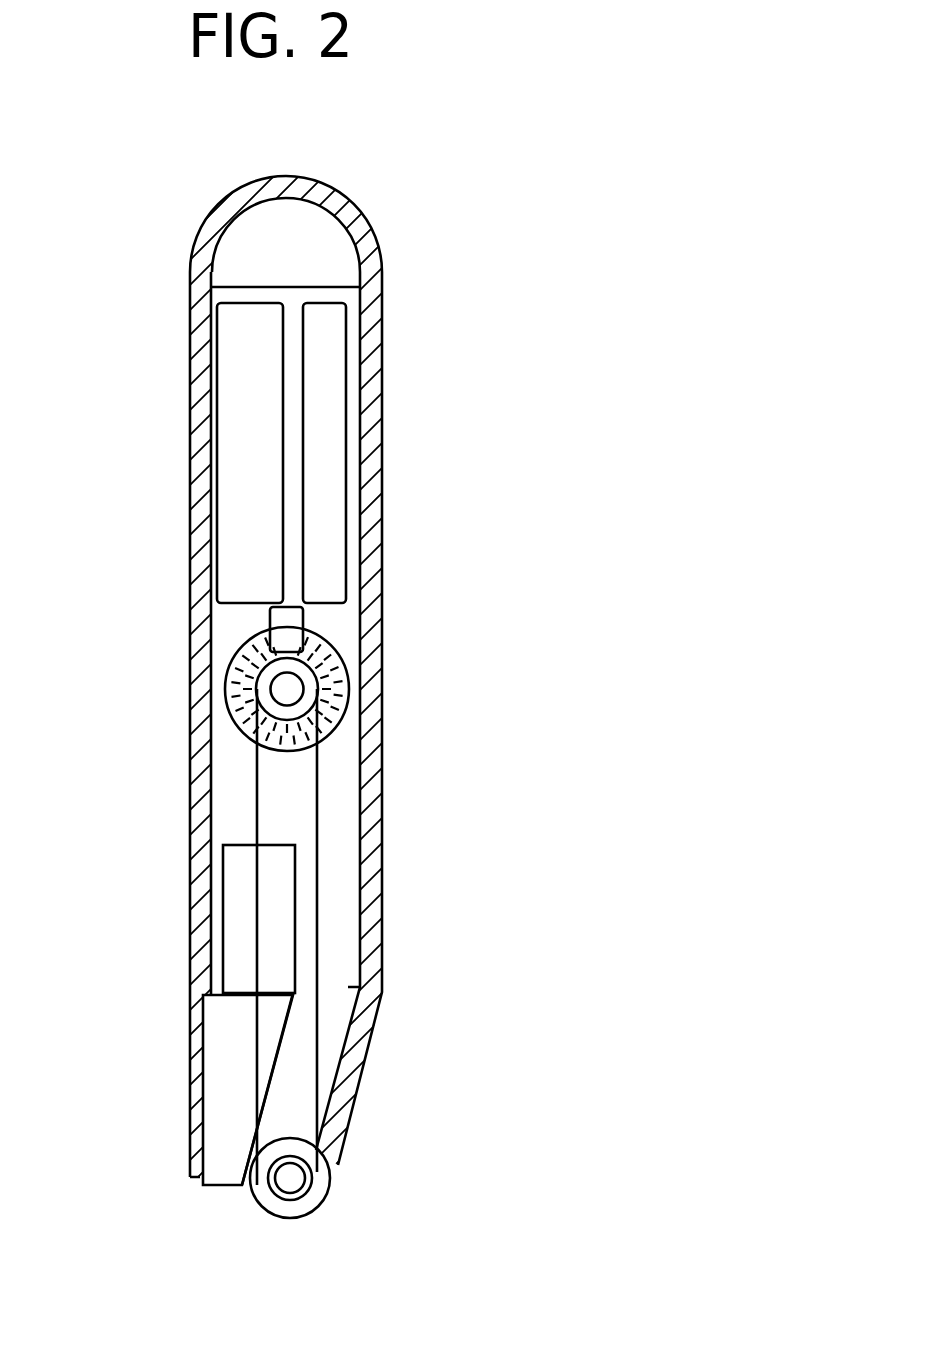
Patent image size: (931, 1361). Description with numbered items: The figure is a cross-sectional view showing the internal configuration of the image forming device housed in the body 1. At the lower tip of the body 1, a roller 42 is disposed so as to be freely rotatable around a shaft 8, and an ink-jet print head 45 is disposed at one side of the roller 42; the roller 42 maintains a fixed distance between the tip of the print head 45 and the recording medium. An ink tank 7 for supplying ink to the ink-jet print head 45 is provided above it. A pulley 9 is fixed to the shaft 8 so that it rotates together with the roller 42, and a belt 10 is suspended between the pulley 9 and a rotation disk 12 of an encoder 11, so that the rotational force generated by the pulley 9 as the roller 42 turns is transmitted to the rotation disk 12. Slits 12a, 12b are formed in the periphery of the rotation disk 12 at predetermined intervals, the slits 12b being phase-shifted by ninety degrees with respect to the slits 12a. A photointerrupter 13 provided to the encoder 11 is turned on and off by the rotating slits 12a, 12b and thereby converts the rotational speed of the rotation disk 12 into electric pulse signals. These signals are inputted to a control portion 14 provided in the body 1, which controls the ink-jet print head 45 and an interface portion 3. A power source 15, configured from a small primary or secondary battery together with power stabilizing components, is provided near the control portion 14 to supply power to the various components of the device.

The body 1 is at (385, 726).
The interface portion 3 is at (308, 254).
The ink tank 7 is at (272, 897).
The shaft 8 is at (282, 1185).
The pulley 9 is at (318, 1202).
The belt 10 is at (318, 762).
The encoder 11 is at (337, 645).
The rotation disk 12 is at (193, 737).
The slits 12a is at (242, 661).
The slits 12b is at (243, 685).
The photointerrupter 13 is at (280, 623).
The control portion 14 is at (253, 382).
The power source 15 is at (330, 447).
The roller 42 is at (322, 1182).
The ink-jet print head 45 is at (245, 1092).